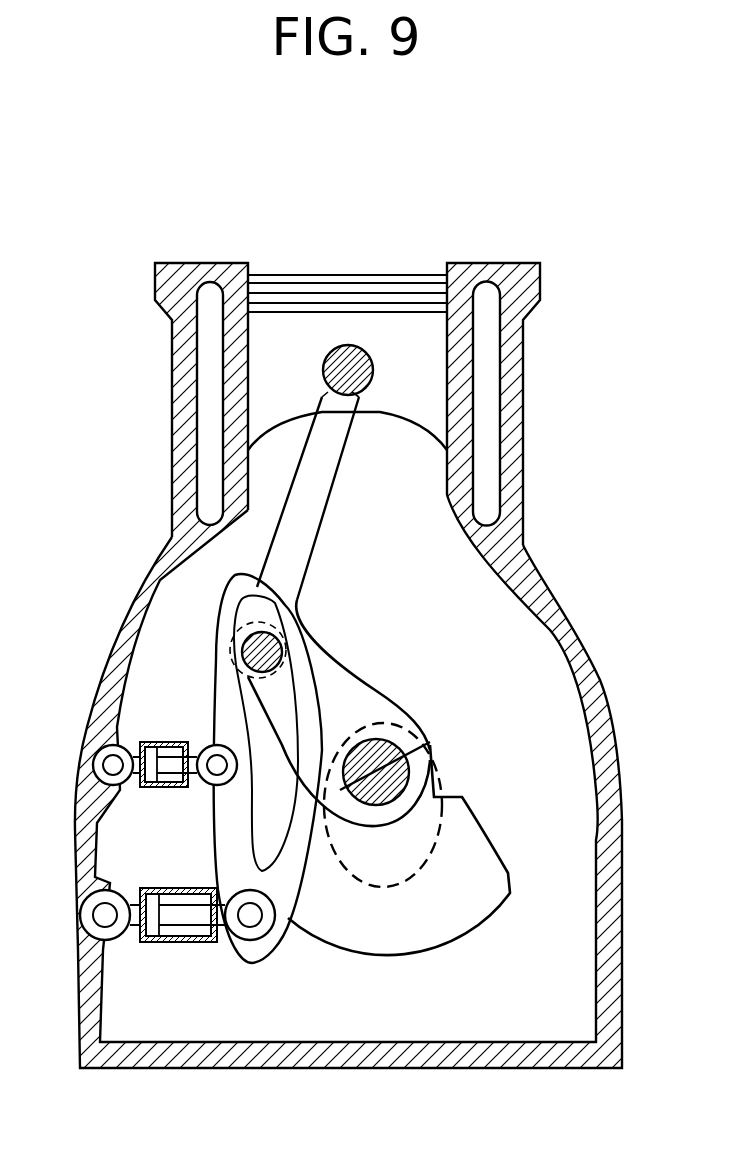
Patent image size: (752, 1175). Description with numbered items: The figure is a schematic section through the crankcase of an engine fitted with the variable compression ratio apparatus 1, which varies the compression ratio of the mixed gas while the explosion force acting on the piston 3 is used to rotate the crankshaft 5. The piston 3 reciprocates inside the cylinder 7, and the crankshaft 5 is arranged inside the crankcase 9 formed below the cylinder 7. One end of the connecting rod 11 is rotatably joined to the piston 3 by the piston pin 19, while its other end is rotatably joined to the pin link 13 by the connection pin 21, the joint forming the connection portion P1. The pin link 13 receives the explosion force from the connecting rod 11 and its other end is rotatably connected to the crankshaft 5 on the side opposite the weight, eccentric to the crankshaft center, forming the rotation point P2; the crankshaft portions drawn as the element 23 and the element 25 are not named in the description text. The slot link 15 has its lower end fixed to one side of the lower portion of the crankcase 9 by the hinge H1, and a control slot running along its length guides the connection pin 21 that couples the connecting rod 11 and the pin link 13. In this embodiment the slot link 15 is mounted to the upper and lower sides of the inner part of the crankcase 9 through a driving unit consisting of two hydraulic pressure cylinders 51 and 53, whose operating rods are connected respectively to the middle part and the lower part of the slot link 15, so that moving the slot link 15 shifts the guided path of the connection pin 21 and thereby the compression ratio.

The variable compression ratio apparatus 1 is at (352, 580).
The piston 3 is at (413, 353).
The crankshaft 5 is at (445, 812).
The cylinder 7 is at (458, 398).
The crankcase 9 is at (600, 688).
The connecting rod 11 is at (300, 507).
The pin link 13 is at (353, 698).
The slot link 15 is at (227, 624).
The piston pin 19 is at (348, 356).
The connection pin 21 is at (245, 585).
The crank web 23 is at (478, 893).
The crank pin 25 is at (430, 742).
The hydraulic pressure cylinder 51 is at (157, 733).
The hydraulic pressure cylinder 53 is at (177, 887).
The hinge H1 is at (252, 920).
The connection portion P1 is at (283, 648).
The rotation point P2 is at (387, 753).